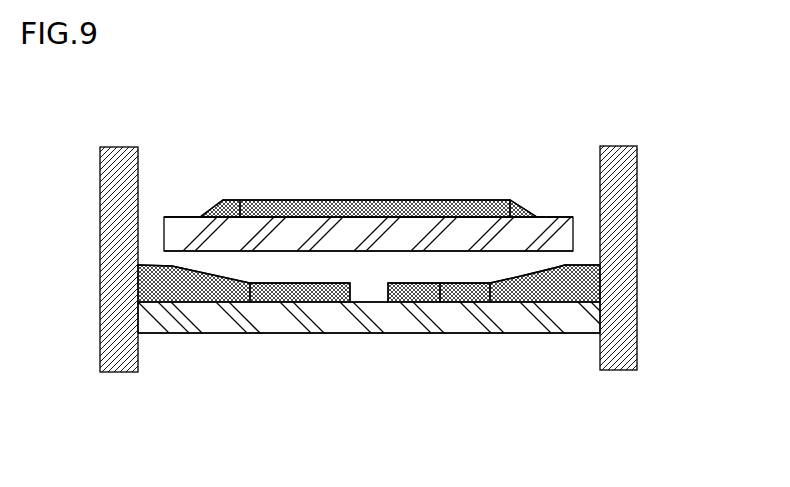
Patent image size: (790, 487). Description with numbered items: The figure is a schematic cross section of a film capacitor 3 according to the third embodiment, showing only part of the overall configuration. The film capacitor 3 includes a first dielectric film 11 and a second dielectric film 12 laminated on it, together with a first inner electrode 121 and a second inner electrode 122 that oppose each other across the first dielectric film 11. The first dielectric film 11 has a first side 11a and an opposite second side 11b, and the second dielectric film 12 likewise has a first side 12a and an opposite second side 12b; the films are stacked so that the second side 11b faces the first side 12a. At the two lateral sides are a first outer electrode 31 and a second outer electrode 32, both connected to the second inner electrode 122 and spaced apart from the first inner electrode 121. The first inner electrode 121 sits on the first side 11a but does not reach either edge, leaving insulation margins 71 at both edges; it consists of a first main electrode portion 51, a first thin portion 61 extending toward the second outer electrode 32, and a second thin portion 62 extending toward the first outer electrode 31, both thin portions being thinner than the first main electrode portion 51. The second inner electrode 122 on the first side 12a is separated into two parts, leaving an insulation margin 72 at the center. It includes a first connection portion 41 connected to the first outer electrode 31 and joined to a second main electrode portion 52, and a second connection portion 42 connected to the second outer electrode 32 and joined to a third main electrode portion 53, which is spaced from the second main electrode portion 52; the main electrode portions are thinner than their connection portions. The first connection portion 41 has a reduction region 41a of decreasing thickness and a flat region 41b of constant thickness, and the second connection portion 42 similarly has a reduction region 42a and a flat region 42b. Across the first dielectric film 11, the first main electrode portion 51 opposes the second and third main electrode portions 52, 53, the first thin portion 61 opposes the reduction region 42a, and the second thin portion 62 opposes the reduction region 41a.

The film capacitor 3 is at (649, 118).
The first outer electrode 31 is at (112, 180).
The second outer electrode 32 is at (625, 182).
The first dielectric film 11 is at (178, 241).
The first side of the first dielectric film 11a is at (200, 218).
The second side of the first dielectric film 11b is at (197, 252).
The first inner electrode 121 is at (368, 139).
The second thin portion 62 is at (223, 200).
The first main electrode portion 51 is at (340, 200).
The first thin portion 61 is at (501, 161).
The insulation margins 71 is at (181, 217).
The second dielectric film 12 is at (600, 321).
The first side of the second dielectric film 12a is at (599, 305).
The second side of the second dielectric film 12b is at (577, 333).
The second inner electrode 122 is at (369, 366).
The first connection portion 41 is at (244, 343).
The reduction region 41a is at (218, 279).
The flat region 41b is at (157, 276).
The second main electrode portion 52 is at (323, 291).
The insulation margin 72 is at (372, 302).
The third main electrode portion 53 is at (418, 290).
The second connection portion 42 is at (494, 342).
The reduction region 42a is at (525, 302).
The flat region 42b is at (577, 287).